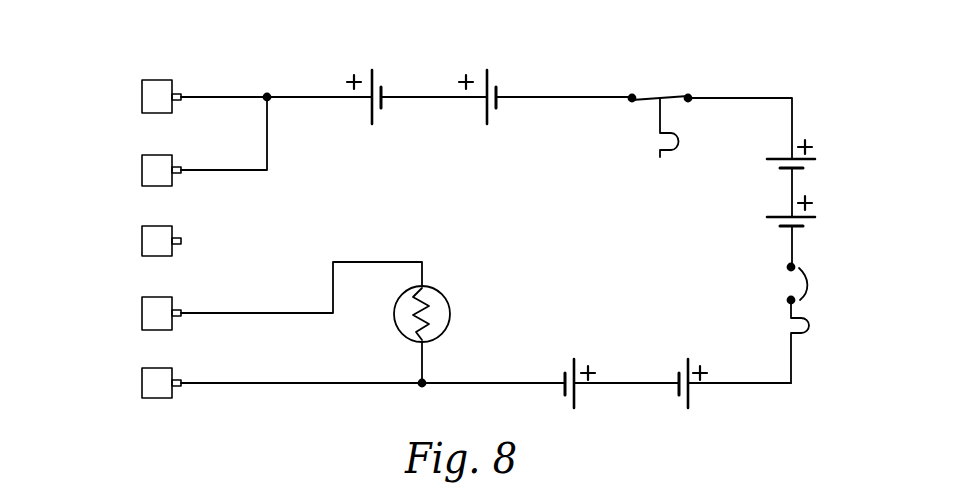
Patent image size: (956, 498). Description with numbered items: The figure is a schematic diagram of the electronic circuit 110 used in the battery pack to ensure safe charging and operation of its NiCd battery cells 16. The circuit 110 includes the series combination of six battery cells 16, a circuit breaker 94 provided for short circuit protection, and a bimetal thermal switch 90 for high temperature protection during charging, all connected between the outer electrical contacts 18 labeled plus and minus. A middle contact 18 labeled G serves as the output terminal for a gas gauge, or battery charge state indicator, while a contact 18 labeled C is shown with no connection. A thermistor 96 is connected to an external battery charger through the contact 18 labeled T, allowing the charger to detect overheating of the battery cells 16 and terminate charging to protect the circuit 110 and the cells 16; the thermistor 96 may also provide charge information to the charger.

The battery cells 16 is at (372, 70).
The electrical contacts 18 is at (142, 100).
The bimetal thermal switch 90 is at (695, 88).
The circuit breaker 94 is at (807, 338).
The thermistor 96 is at (412, 343).
The electronic circuit 110 is at (592, 46).